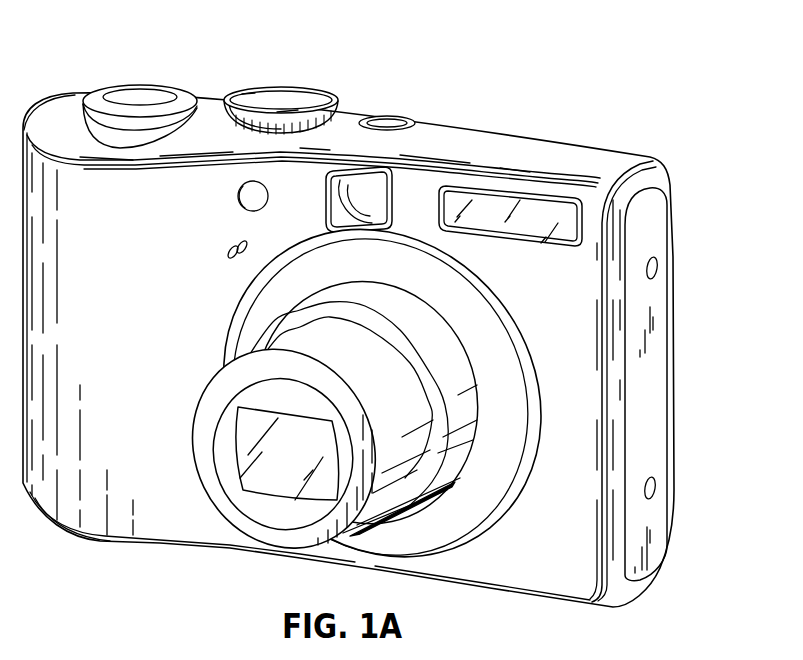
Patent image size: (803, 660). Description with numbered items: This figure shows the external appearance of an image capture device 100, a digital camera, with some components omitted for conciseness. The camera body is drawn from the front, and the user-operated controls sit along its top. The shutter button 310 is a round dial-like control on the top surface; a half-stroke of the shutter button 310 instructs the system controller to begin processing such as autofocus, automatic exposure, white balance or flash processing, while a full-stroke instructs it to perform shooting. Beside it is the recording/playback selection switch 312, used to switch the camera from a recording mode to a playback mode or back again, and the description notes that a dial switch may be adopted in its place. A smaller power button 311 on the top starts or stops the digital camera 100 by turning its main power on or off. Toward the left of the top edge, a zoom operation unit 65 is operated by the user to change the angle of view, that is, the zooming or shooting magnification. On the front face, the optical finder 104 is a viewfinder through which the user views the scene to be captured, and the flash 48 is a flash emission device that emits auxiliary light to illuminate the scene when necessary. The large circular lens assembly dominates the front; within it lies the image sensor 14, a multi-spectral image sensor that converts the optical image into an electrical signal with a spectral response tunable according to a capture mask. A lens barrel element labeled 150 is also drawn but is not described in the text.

The image capture device 100 is at (732, 192).
The zoom operation unit 65 is at (70, 96).
The shutter button 310 is at (140, 96).
The recording/playback selection switch 312 is at (282, 94).
The power button 311 is at (392, 120).
The optical finder 104 is at (380, 197).
The flash 48 is at (533, 207).
The lens barrel 150 is at (407, 473).
The image sensor 14 is at (260, 483).